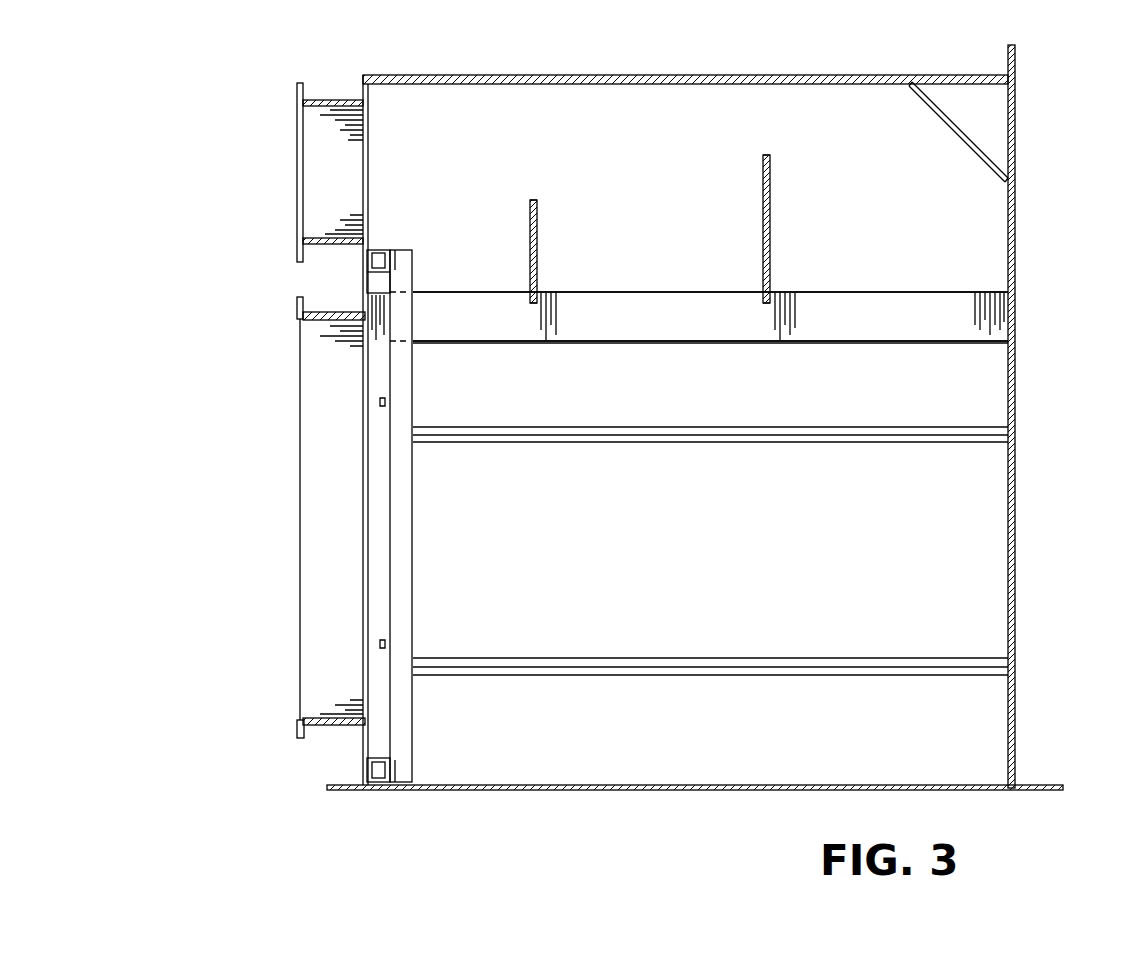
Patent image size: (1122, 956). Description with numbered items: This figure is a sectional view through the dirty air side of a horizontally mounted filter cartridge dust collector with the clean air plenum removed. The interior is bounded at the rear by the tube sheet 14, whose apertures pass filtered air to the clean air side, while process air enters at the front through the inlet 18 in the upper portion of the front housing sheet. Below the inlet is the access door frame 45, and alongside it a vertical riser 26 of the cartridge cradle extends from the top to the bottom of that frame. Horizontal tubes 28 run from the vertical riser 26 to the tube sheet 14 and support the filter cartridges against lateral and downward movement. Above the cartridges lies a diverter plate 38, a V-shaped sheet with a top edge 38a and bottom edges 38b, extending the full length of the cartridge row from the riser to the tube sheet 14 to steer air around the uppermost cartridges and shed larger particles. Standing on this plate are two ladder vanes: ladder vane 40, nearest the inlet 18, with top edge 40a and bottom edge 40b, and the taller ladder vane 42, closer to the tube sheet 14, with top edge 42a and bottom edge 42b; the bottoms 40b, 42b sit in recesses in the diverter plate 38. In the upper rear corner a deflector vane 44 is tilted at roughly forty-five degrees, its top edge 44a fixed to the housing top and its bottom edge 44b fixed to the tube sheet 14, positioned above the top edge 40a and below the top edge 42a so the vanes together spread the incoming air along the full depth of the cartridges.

The tube sheet 14 is at (1008, 545).
The inlet 18 is at (283, 198).
The vertical riser 26 is at (413, 390).
The horizontal tube 28 is at (552, 437).
The diverter plate 38 is at (982, 318).
The top edge 38a is at (838, 292).
The bottom edge 38b is at (753, 343).
The ladder vane 40 is at (537, 230).
The top edge 40a is at (530, 201).
The bottom edge 40b is at (532, 304).
The ladder vane 42 is at (763, 201).
The top edge 42a is at (770, 156).
The bottom edge 42b is at (763, 304).
The deflector vane 44 is at (945, 112).
The top edge 44a is at (912, 84).
The bottom edge 44b is at (1006, 179).
The access door frame 45 is at (283, 448).